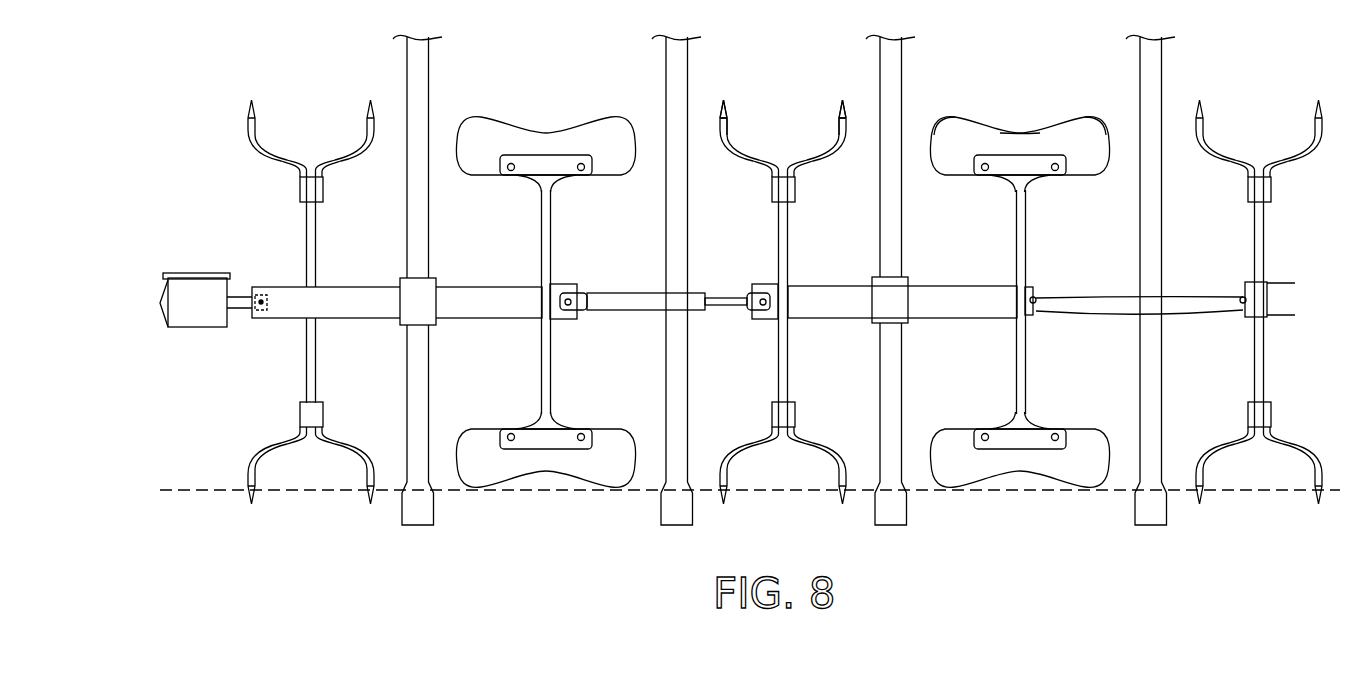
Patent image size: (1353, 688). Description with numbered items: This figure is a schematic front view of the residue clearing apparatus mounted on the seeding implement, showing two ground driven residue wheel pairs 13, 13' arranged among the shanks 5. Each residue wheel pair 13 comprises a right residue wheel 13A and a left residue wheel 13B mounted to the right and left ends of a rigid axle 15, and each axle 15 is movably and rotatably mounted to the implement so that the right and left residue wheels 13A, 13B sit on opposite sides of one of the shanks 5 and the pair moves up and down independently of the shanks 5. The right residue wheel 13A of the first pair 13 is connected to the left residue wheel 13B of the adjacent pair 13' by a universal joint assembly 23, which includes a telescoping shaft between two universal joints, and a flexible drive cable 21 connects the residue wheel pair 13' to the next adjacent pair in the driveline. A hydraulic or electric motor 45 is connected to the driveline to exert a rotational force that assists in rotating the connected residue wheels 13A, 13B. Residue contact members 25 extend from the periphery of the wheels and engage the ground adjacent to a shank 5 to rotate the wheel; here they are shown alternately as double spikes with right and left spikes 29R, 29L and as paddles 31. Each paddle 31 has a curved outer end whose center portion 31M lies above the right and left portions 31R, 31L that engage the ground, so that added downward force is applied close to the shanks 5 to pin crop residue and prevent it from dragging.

The shank 5 is at (428, 61).
The residue wheel pair 13 is at (465, 328).
The residue wheel pair 13' is at (892, 328).
The right residue wheel 13A is at (307, 226).
The left residue wheel 13B is at (550, 228).
The rigid axle 15 is at (363, 287).
The flexible drive cable 21 is at (1195, 297).
The universal joint assembly 23 is at (677, 292).
The residue contact member 25 is at (508, 123).
The right spike 29R is at (730, 120).
The left spike 29L is at (837, 120).
The paddle 31 is at (1075, 175).
The right portion of paddle 31R is at (950, 118).
The center portion of paddle 31M is at (1018, 130).
The left portion of paddle 31L is at (1087, 118).
The motor 45 is at (181, 273).